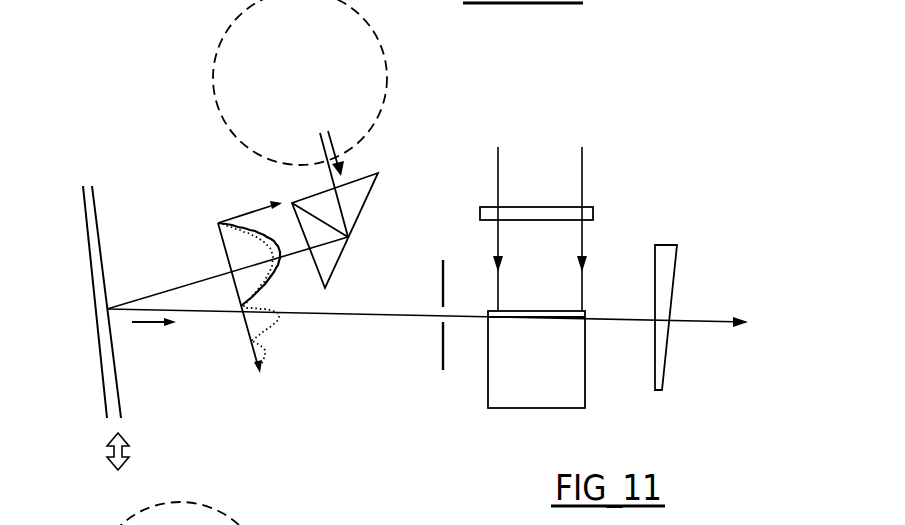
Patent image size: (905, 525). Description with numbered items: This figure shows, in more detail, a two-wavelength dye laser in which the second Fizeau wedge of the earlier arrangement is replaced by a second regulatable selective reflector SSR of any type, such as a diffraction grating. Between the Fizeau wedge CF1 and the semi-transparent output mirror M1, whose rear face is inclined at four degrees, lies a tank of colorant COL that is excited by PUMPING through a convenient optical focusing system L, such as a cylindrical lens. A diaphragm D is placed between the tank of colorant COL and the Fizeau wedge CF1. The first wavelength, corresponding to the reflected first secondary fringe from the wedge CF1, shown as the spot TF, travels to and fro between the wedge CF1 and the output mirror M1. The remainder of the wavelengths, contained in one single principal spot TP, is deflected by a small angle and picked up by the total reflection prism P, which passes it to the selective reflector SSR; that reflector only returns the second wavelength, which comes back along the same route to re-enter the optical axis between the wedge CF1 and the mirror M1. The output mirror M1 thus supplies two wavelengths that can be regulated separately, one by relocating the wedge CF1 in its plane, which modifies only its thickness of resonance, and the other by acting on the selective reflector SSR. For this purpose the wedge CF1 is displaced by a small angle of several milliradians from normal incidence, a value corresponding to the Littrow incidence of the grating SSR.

The second regulatable selective reflector SSR is at (300, 82).
The total reflection prism P is at (335, 230).
The Fizeau wedge CF1 is at (133, 328).
The principal spot TP is at (282, 257).
The reflected first secondary fringe spot TF is at (278, 314).
The diaphragm D is at (432, 301).
The pumping PUMPING is at (540, 218).
The optical focusing system L is at (594, 215).
The tank of colorant COL is at (536, 359).
The semi-transparent output mirror M1 is at (664, 338).